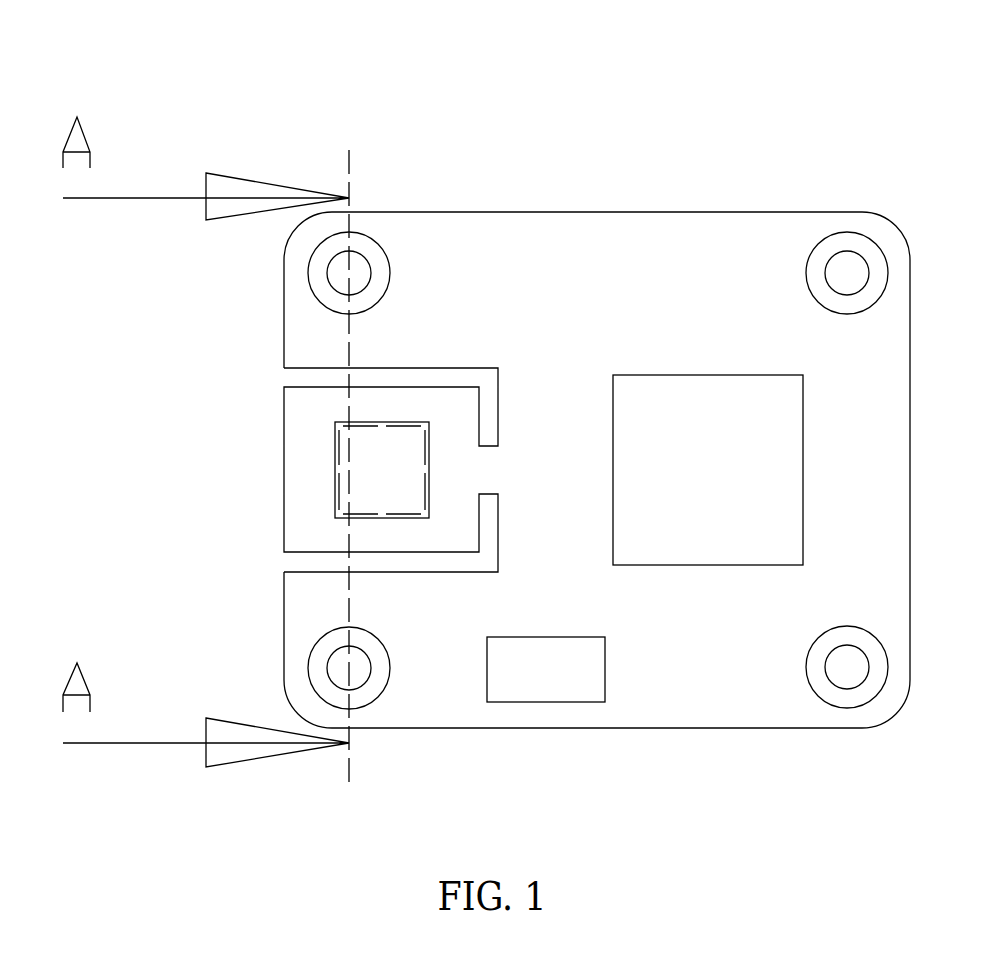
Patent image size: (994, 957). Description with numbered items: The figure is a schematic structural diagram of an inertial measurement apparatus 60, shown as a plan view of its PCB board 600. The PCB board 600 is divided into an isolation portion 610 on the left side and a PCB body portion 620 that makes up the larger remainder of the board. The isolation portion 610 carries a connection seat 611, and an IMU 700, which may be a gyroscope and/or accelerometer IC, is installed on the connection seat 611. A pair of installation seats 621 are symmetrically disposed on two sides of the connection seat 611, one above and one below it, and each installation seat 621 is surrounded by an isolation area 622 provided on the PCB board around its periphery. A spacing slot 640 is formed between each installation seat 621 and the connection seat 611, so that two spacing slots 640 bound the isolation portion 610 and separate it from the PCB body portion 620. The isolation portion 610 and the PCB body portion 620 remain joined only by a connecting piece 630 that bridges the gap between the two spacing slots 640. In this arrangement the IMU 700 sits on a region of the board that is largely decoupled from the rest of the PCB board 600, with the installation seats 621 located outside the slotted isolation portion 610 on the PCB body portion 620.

The inertial measurement apparatus 60 is at (732, 180).
The PCB board 600 is at (325, 63).
The isolation portion 610 is at (450, 412).
The connection seat 611 is at (338, 483).
The PCB body portion 620 is at (577, 283).
The installation seat 621 is at (355, 674).
The isolation area 622 is at (383, 674).
The connecting piece 630 is at (485, 467).
The spacing slot 640 is at (310, 378).
The IMU 700 is at (335, 446).